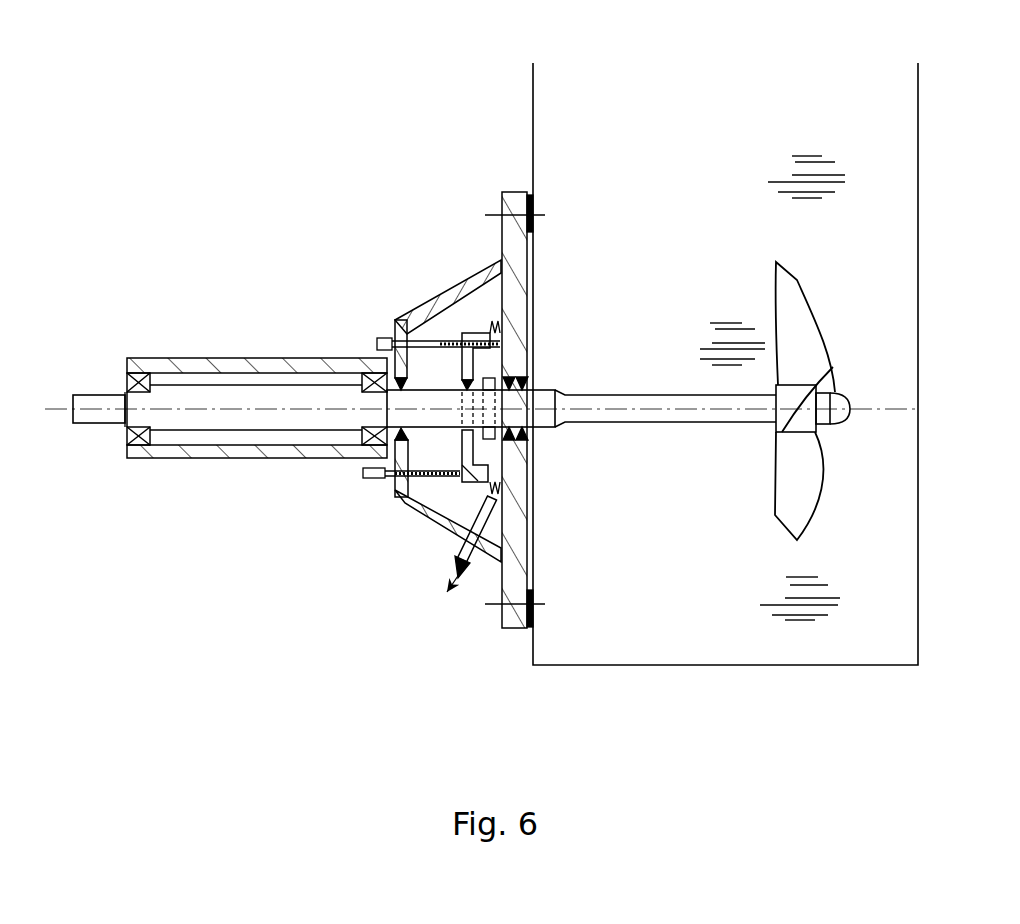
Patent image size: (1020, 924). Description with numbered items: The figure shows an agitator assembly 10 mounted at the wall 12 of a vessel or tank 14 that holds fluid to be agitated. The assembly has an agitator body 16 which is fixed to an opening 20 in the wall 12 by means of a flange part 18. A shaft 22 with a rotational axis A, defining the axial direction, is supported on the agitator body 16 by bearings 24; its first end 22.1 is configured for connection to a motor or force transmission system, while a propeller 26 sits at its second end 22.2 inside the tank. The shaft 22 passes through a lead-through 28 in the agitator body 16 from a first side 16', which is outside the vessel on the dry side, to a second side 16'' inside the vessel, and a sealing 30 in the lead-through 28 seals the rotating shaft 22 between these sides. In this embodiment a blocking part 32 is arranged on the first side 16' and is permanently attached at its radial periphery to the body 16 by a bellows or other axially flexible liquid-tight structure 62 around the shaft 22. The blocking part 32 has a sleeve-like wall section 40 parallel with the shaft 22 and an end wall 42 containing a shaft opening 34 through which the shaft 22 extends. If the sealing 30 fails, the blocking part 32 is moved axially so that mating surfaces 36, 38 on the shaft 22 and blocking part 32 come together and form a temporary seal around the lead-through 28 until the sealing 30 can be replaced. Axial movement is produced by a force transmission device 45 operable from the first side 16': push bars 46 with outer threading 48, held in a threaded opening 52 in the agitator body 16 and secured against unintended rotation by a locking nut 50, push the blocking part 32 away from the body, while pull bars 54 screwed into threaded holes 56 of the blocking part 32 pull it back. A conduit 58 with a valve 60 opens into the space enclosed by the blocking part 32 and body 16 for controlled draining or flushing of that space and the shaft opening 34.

The agitator assembly 10 is at (440, 214).
The wall 12 is at (535, 172).
The vessel or tank 14 is at (735, 309).
The agitator body 16 is at (572, 264).
The first side 16' is at (412, 227).
The second side 16'' is at (637, 225).
The flange part 18 is at (502, 220).
The opening 20 is at (538, 563).
The shaft 22 is at (208, 395).
The first end 22.1 is at (83, 400).
The second end 22.2 is at (766, 434).
The bearings 24 is at (145, 377).
The propeller 26 is at (810, 362).
The lead-through 28 is at (557, 437).
The sealing 30 is at (546, 384).
The blocking part 32 is at (440, 302).
The shaft opening 34 is at (460, 433).
The mating surface 36 is at (510, 441).
The mating surface 38 is at (514, 452).
The wall section 40 is at (470, 330).
The end wall 42 is at (396, 336).
The force transmission device 45 is at (345, 345).
The push bars 46 is at (456, 522).
The outer threading 48 is at (403, 480).
The locking nut 50 is at (385, 474).
The threaded opening 52 is at (396, 499).
The pull bars 54 is at (434, 310).
The threaded holes 56 is at (490, 365).
The conduit 58 is at (452, 566).
The valve 60 is at (470, 565).
The bellows 62 is at (498, 318).
The rotational axis A is at (852, 409).